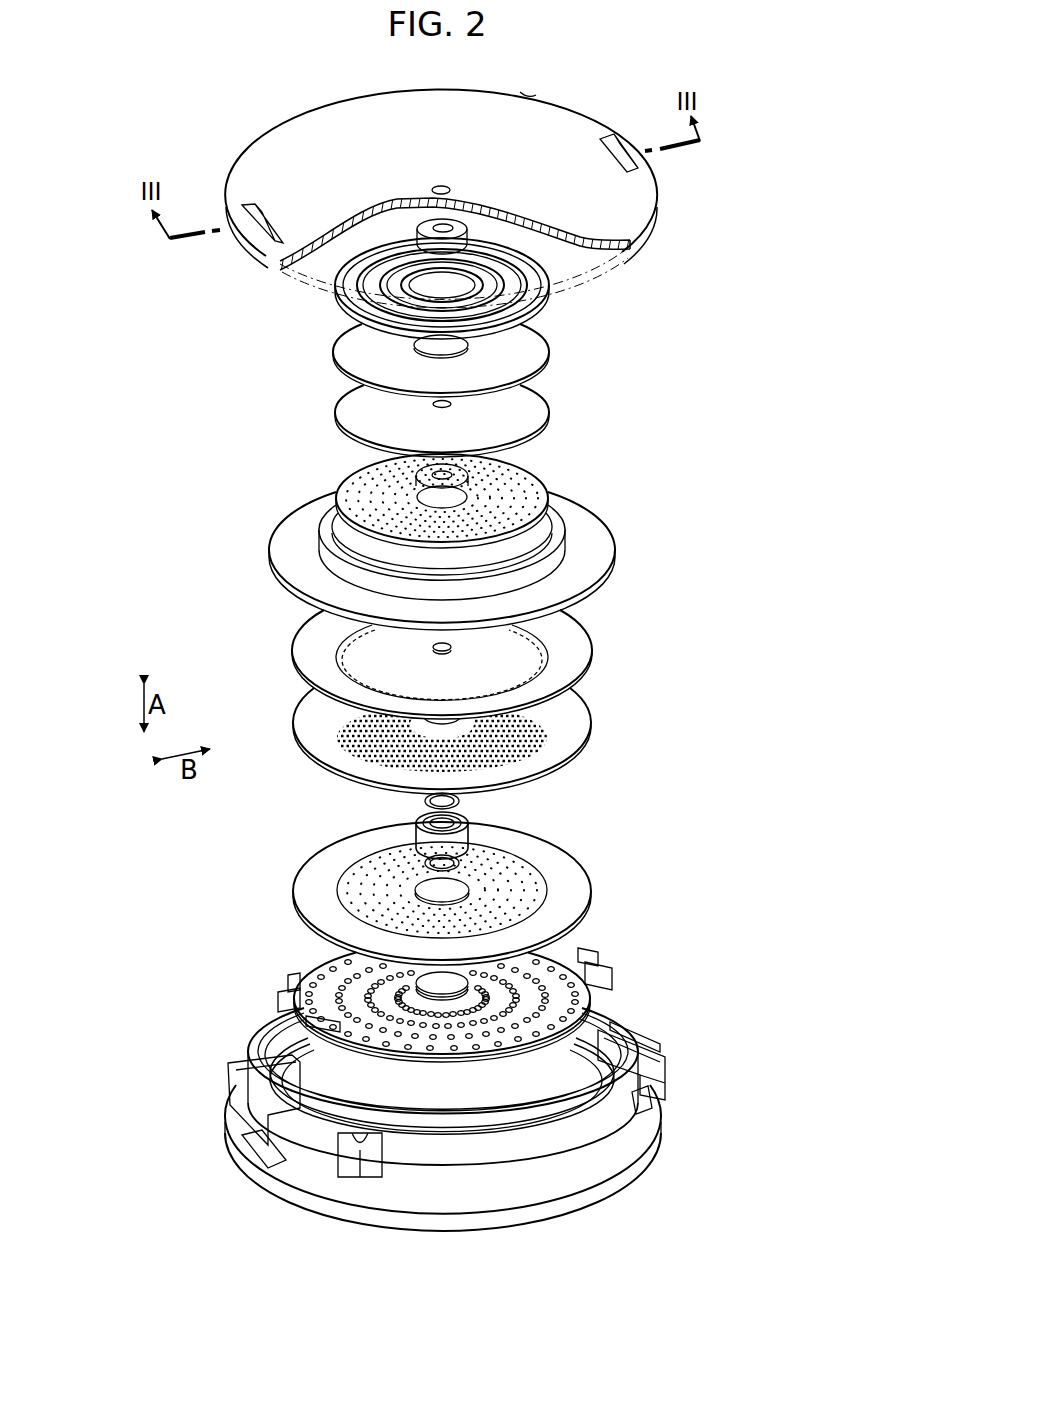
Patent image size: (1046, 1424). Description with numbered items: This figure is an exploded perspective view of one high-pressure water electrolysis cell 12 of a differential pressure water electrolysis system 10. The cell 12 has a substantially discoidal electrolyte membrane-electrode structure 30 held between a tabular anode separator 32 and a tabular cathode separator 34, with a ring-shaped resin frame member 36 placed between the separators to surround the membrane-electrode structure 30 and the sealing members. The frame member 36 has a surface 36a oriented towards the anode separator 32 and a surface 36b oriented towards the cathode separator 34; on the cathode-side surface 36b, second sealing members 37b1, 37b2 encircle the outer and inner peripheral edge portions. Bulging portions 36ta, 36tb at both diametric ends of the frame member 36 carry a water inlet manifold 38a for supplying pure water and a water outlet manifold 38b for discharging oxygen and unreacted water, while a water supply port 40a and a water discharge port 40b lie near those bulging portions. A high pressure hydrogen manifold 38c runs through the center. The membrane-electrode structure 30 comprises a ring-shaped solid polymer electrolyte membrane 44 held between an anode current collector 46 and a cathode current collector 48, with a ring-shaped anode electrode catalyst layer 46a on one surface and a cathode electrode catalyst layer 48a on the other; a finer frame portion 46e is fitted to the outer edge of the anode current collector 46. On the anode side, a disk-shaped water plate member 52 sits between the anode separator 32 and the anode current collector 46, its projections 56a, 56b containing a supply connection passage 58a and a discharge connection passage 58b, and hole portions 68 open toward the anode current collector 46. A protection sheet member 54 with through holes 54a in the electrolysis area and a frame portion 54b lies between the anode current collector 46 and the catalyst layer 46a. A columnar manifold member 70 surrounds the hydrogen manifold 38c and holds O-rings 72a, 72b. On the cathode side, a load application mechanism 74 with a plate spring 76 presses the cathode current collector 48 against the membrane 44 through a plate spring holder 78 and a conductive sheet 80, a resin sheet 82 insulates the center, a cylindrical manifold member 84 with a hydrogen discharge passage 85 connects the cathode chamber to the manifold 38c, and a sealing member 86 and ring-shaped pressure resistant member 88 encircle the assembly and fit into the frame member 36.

The gas sensor 10 is at (552, 75).
The high-pressure water electrolysis cell 12 is at (516, 75).
The electrolyte membrane-electrode structure 30 is at (445, 660).
The anode separator 32 is at (464, 1124).
The cathode separator 34 is at (652, 238).
The resin frame member 36 is at (464, 1124).
The surface oriented towards the anode separator 36a is at (546, 1147).
The surface oriented towards the cathode separator 36b is at (552, 1112).
The bulging portion 36ta is at (280, 1165).
The bulging portion 36tb is at (652, 1060).
The second sealing member 37b1 is at (260, 1040).
The second sealing member 37b2 is at (476, 1127).
The water inlet manifold 38a is at (256, 1146).
The water outlet manifold 38b is at (645, 1098).
The high pressure hydrogen manifold 38c is at (447, 652).
The water supply port 40a is at (284, 1132).
The water discharge port 40b is at (616, 1035).
The solid polymer electrolyte membrane 44 is at (575, 637).
The anode current collector 46 is at (475, 893).
The anode electrode catalyst layer 46a is at (350, 680).
The frame portion 46e is at (580, 889).
The cathode current collector 48 is at (463, 477).
The cathode electrode catalyst layer 48a is at (353, 648).
The water plate member 52 is at (440, 994).
The protection sheet member 54 is at (474, 757).
The through holes 54a is at (517, 760).
The frame portion 54b is at (563, 738).
The projection 56a is at (281, 999).
The projection 56b is at (604, 973).
The supply connection passage 58a is at (292, 982).
The discharge connection passage 58b is at (585, 957).
The hole portions 68 is at (366, 1018).
The manifold member 70 is at (414, 822).
The O-ring 72a is at (461, 802).
The O-ring 72b is at (425, 862).
The load application mechanism 74 is at (322, 305).
The plate spring 76 is at (367, 255).
The plate spring holder 78 is at (348, 350).
The conductive sheet 80 is at (348, 410).
The resin sheet 82 is at (457, 472).
The manifold member 84 is at (461, 226).
The hydrogen discharge passage 85 is at (427, 229).
The sealing member 86 is at (552, 516).
The pressure resistant member 88 is at (283, 533).